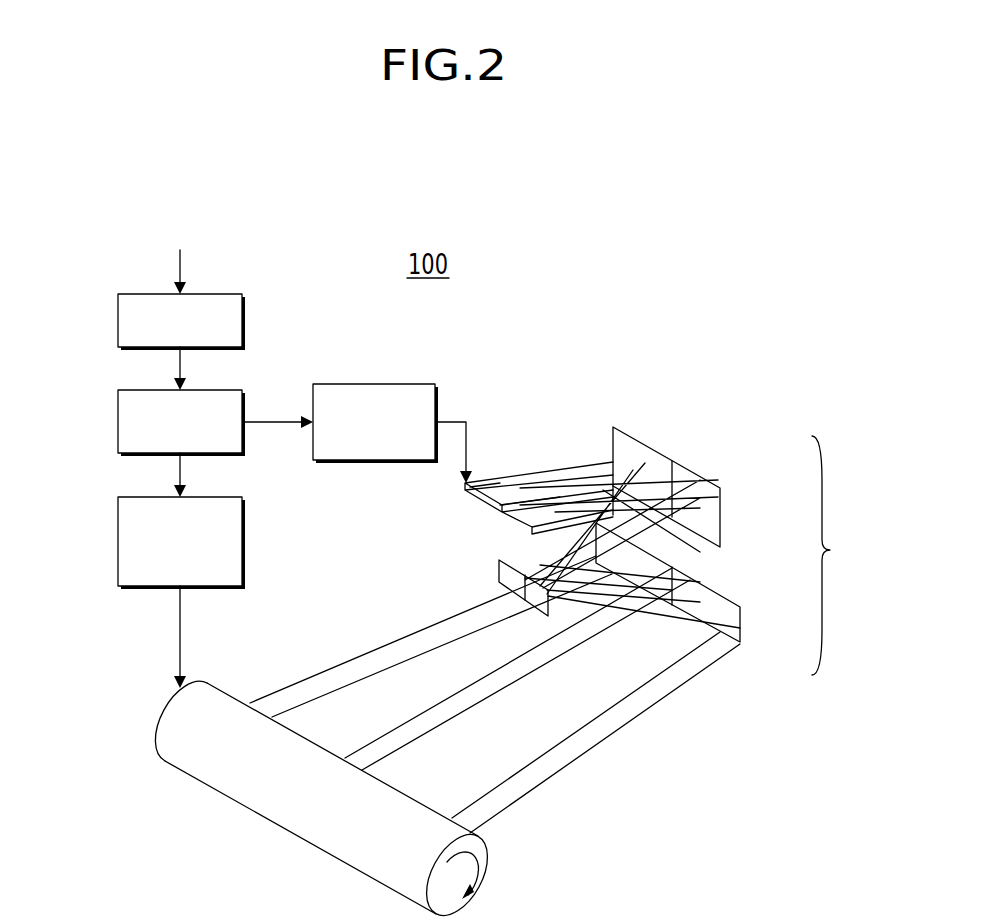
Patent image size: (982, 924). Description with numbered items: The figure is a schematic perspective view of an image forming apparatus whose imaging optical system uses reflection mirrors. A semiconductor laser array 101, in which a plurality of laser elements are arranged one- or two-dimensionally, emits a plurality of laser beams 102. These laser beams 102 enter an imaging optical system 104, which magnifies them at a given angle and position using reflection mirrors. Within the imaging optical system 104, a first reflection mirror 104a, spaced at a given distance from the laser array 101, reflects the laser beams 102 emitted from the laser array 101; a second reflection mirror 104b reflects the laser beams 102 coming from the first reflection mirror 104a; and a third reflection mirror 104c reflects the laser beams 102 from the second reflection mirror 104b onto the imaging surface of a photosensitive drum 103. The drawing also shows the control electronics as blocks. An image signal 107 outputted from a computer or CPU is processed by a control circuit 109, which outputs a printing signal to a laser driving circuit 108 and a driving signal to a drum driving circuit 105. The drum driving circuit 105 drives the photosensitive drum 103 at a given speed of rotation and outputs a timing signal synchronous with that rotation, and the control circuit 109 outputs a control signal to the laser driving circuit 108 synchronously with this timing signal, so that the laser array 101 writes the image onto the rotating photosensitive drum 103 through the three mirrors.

The semiconductor laser array 101 is at (498, 508).
The laser beams 102 is at (548, 476).
The photosensitive drum 103 is at (207, 688).
The imaging optical system 104 is at (842, 555).
The first reflection mirror 104a is at (697, 468).
The second reflection mirror 104b is at (550, 612).
The third reflection mirror 104c is at (700, 590).
The drum driving circuit 105 is at (118, 527).
The image signal 107 is at (118, 318).
The laser driving circuit 108 is at (372, 384).
The control circuit 109 is at (118, 418).